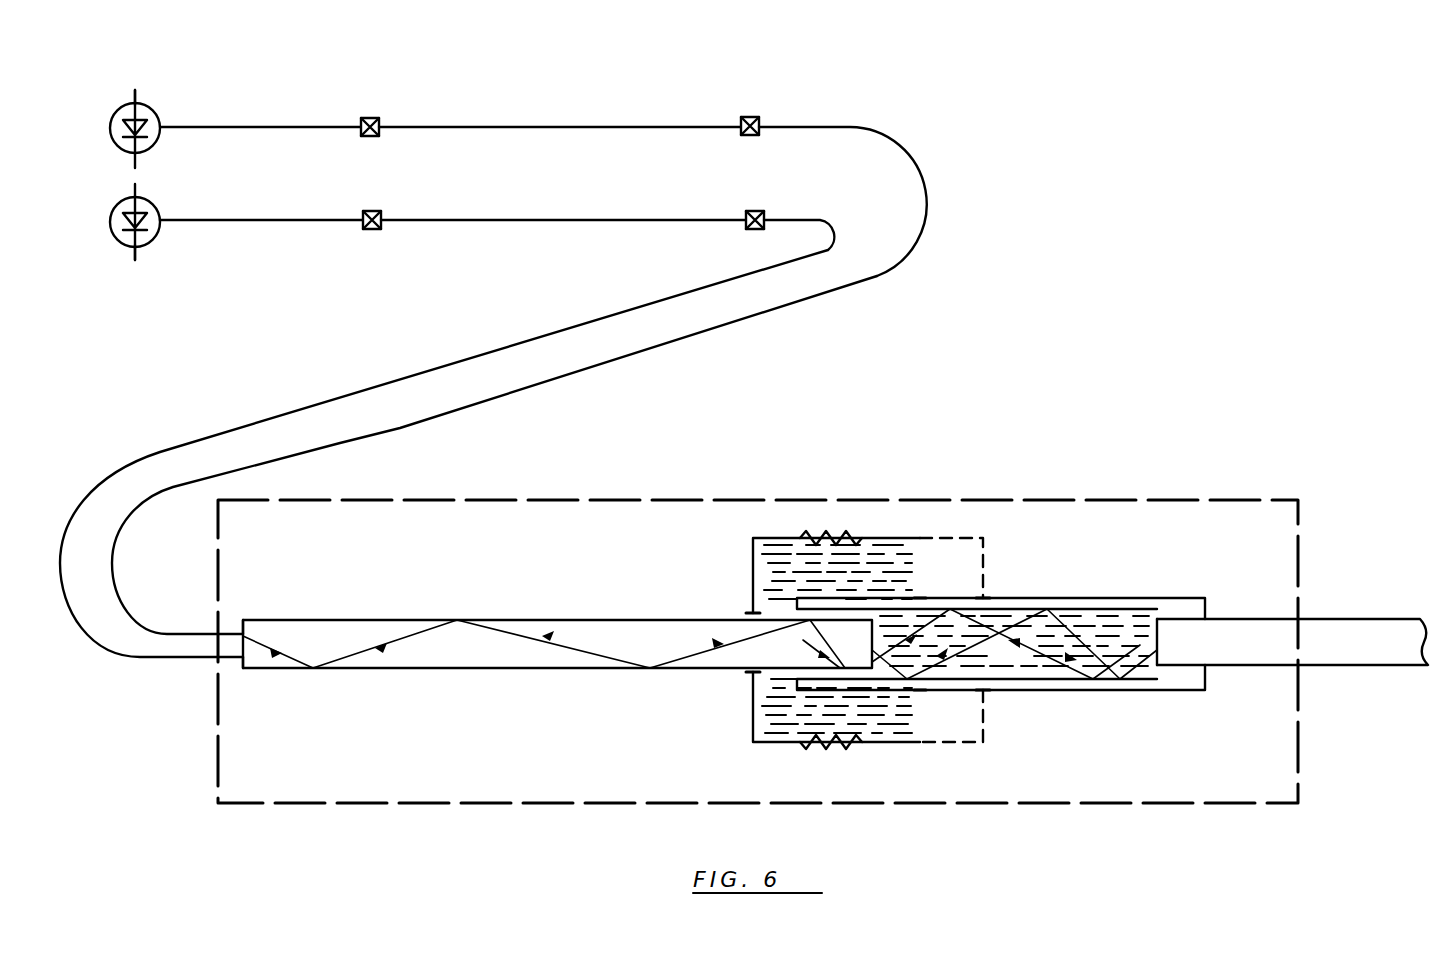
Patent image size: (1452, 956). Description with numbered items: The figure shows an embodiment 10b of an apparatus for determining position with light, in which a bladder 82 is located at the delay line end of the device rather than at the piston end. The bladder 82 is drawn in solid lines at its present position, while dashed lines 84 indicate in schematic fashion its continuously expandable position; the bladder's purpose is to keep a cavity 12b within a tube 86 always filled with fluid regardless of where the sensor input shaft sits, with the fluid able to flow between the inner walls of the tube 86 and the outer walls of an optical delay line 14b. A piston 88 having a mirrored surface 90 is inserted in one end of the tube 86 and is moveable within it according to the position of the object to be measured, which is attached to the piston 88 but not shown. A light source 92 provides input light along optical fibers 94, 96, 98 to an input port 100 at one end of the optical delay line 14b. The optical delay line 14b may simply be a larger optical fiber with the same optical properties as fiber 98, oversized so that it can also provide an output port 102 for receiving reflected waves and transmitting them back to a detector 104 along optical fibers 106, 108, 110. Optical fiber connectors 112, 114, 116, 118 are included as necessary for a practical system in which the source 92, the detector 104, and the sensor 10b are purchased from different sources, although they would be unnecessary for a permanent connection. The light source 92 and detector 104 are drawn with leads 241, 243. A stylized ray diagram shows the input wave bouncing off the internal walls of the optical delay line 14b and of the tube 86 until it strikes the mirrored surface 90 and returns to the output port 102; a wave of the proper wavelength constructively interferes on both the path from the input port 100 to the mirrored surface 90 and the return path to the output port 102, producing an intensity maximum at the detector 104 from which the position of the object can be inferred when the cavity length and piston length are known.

The embodiment of the apparatus 10b is at (856, 499).
The cavity 12b is at (1014, 644).
The optical delay line 14b is at (494, 670).
The bladder 82 is at (752, 552).
The dashed lines 84 is at (985, 575).
The tube 86 is at (1065, 598).
The piston 88 is at (1352, 618).
The mirrored surface 90 is at (1153, 648).
The light source 92 is at (153, 111).
The optical fiber 94 is at (262, 127).
The optical fiber 96 is at (482, 127).
The optical fiber 98 is at (852, 126).
The input port 100 is at (233, 628).
The output port 102 is at (232, 668).
The detector 104 is at (155, 241).
The optical fiber 106 is at (498, 348).
The optical fiber 108 is at (528, 220).
The optical fiber 110 is at (276, 221).
The optical fiber connector 112 is at (374, 117).
The optical fiber connector 114 is at (748, 116).
The optical fiber connector 116 is at (374, 210).
The optical fiber connector 118 is at (756, 210).
The diode lead 241 is at (135, 262).
The diode lead 243 is at (132, 94).